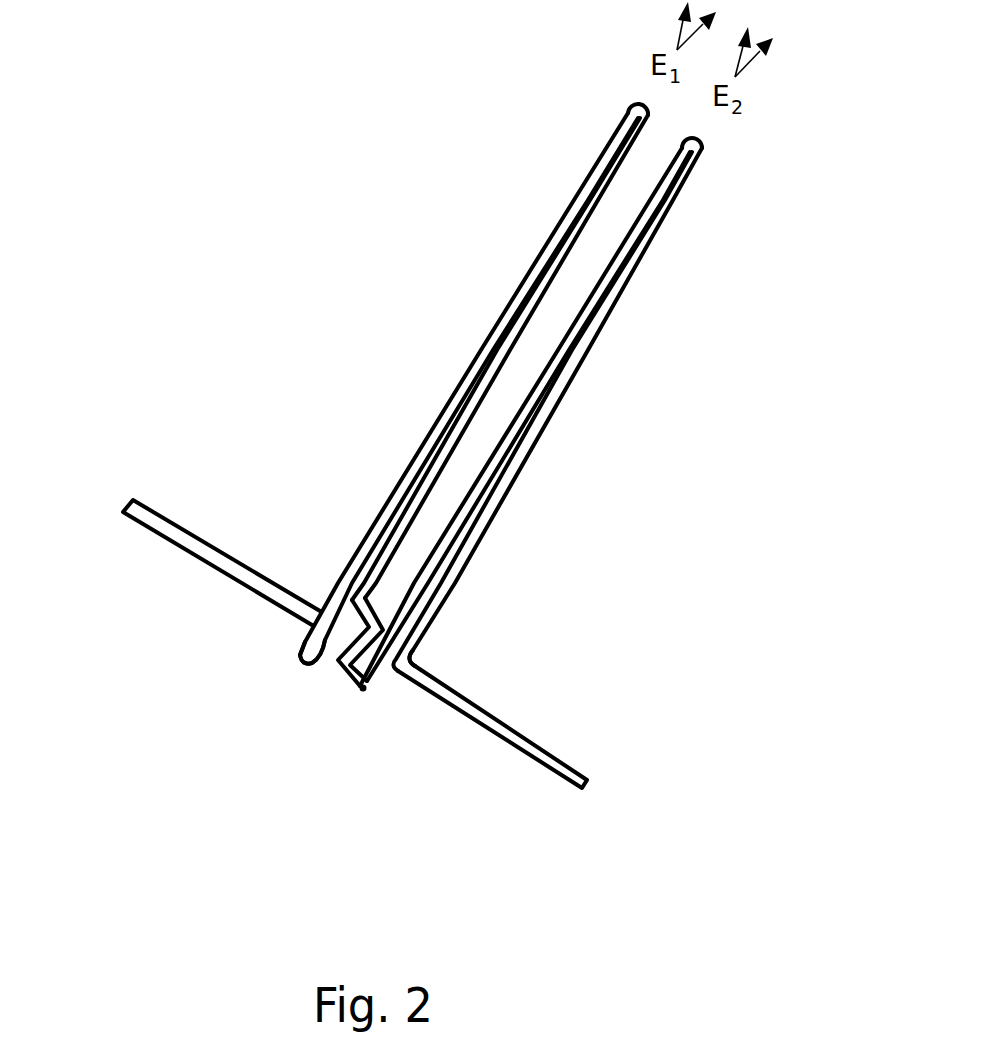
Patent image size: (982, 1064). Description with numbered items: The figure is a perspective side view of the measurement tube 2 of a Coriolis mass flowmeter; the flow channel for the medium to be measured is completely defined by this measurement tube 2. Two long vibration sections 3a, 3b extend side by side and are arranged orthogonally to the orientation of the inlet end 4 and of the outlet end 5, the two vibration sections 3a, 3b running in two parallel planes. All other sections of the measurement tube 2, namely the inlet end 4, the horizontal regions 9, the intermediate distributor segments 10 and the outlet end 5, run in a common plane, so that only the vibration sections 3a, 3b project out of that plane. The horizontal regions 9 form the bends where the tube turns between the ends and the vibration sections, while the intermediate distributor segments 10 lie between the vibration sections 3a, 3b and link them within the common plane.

The measurement tube 2 is at (461, 230).
The vibration section 3a is at (627, 118).
The vibration section 3b is at (690, 153).
The inlet end 4 is at (533, 753).
The outlet end 5 is at (150, 513).
The horizontal region 9 is at (408, 642).
The intermediate distributor segment 10 is at (362, 644).